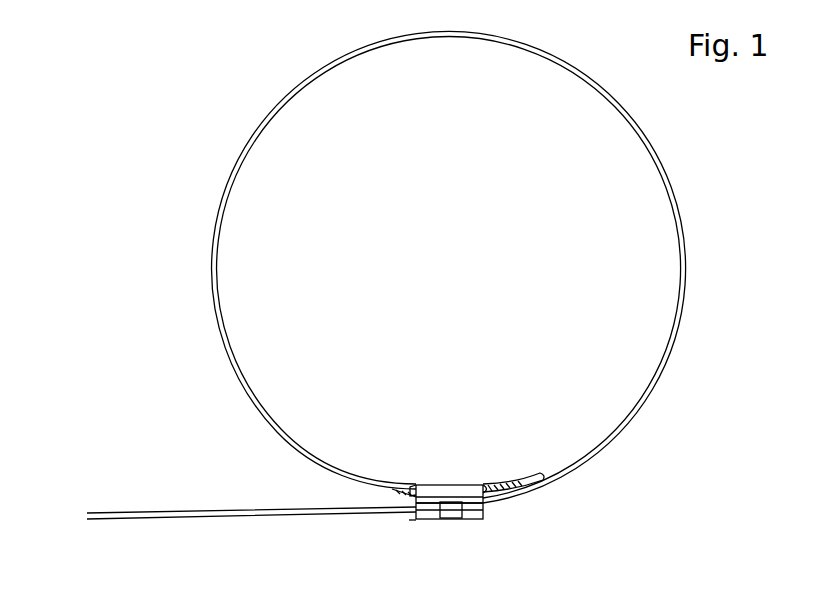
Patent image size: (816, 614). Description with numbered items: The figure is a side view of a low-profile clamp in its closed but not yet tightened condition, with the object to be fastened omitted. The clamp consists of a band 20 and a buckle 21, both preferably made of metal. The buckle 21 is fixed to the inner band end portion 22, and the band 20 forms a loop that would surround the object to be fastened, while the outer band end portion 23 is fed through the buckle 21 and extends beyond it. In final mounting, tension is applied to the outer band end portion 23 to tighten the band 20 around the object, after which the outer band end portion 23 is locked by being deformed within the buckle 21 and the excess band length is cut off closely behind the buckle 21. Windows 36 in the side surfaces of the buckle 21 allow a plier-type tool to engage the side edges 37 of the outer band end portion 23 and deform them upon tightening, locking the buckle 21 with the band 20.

The band 20 is at (676, 363).
The buckle 21 is at (474, 503).
The inner band end portion 22 is at (505, 482).
The outer band end portion 23 is at (352, 512).
The windows 36 is at (444, 500).
The side edges 37 is at (409, 513).